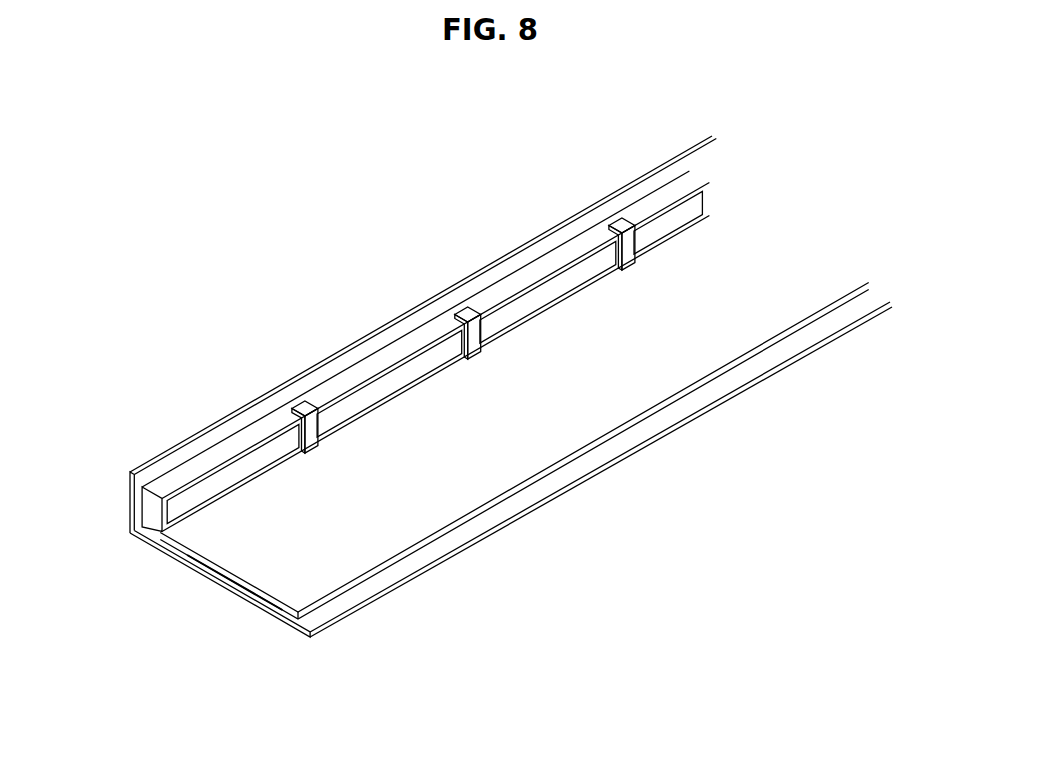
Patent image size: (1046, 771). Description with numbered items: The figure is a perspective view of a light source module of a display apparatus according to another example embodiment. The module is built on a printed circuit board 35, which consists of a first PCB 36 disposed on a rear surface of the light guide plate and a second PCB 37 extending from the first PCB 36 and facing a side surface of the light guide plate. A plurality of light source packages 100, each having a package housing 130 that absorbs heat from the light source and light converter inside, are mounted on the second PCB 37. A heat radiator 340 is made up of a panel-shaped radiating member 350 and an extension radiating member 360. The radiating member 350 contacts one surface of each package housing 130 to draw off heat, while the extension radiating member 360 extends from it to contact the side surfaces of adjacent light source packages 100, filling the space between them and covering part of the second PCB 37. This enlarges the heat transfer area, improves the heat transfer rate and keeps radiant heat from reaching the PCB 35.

The printed circuit board 35 is at (497, 396).
The first PCB 36 is at (200, 576).
The second PCB 37 is at (127, 506).
The light source package 100 is at (425, 351).
The package housing 130 is at (188, 473).
The heat radiator 340 is at (238, 584).
The radiating member 350 is at (323, 587).
The extension radiating member 360 is at (320, 392).